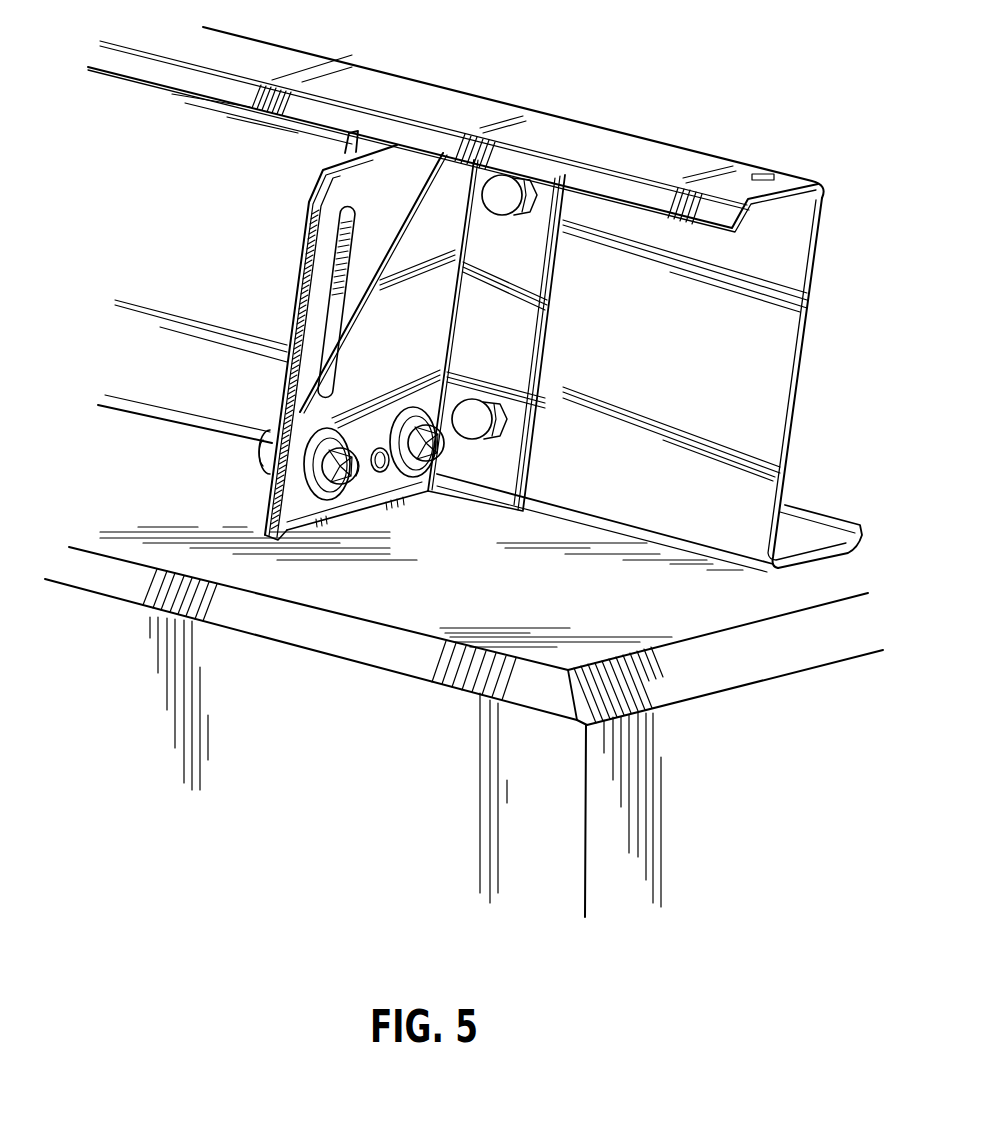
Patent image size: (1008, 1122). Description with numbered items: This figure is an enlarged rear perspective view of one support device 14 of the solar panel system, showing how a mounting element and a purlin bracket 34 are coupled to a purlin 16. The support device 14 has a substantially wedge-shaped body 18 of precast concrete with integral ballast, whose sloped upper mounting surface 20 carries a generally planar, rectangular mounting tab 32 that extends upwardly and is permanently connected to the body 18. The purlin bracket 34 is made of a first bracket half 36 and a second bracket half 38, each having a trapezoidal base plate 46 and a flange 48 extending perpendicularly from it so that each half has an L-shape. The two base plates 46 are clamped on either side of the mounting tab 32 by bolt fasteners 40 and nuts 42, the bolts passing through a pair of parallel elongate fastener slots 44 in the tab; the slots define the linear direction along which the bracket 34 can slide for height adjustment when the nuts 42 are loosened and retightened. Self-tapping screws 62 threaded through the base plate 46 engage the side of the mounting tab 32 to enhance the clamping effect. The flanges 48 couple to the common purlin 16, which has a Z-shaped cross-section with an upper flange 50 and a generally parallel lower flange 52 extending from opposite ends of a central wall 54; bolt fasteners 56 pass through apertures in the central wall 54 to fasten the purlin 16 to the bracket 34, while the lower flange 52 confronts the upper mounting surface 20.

The support device 14 is at (464, 722).
The purlin 16 is at (476, 311).
The body 18 is at (460, 763).
The upper mounting surface 20 is at (548, 617).
The mounting tab 32 is at (413, 362).
The purlin bracket 34 is at (565, 302).
The first bracket half 36 is at (548, 355).
The second bracket half 38 is at (323, 342).
The bolt fastener 40 is at (340, 480).
The nut 42 is at (270, 433).
The fastener slot 44 is at (342, 267).
The base plate 46 is at (347, 350).
The flange 48 is at (350, 148).
The upper flange 50 is at (702, 162).
The lower flange 52 is at (803, 568).
The central wall 54 is at (806, 342).
The bolt fastener 56 is at (502, 200).
The self-tapping screw 62 is at (381, 473).